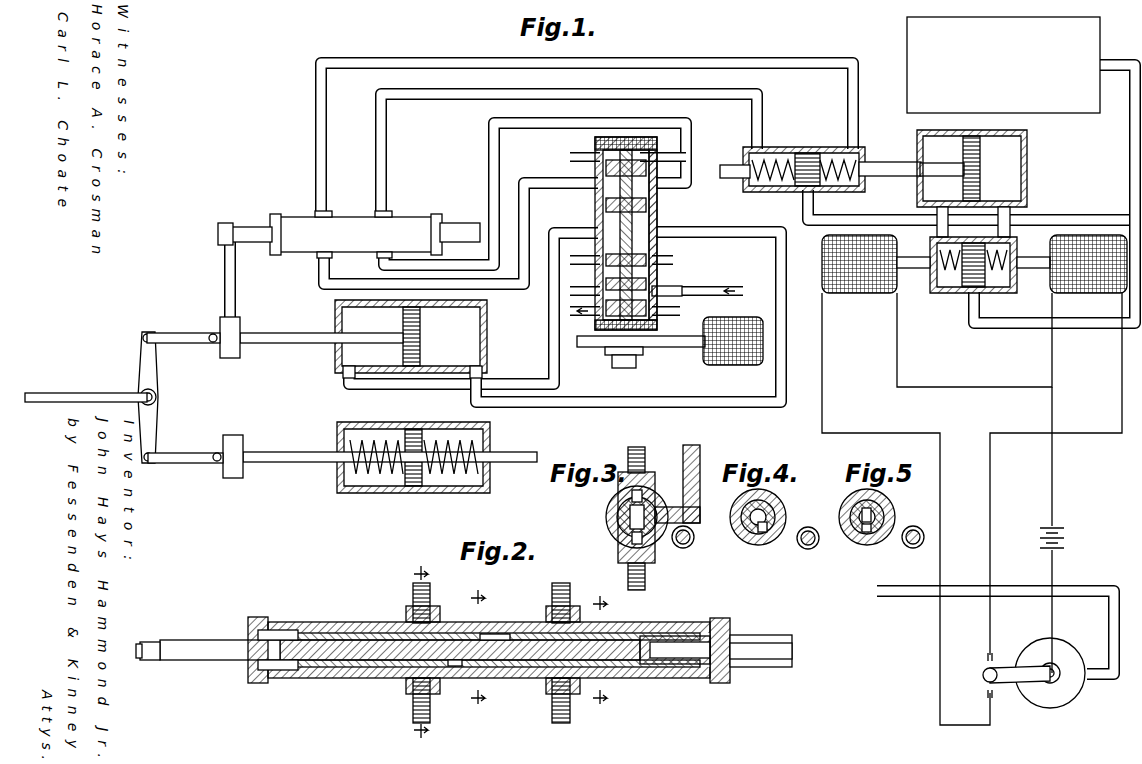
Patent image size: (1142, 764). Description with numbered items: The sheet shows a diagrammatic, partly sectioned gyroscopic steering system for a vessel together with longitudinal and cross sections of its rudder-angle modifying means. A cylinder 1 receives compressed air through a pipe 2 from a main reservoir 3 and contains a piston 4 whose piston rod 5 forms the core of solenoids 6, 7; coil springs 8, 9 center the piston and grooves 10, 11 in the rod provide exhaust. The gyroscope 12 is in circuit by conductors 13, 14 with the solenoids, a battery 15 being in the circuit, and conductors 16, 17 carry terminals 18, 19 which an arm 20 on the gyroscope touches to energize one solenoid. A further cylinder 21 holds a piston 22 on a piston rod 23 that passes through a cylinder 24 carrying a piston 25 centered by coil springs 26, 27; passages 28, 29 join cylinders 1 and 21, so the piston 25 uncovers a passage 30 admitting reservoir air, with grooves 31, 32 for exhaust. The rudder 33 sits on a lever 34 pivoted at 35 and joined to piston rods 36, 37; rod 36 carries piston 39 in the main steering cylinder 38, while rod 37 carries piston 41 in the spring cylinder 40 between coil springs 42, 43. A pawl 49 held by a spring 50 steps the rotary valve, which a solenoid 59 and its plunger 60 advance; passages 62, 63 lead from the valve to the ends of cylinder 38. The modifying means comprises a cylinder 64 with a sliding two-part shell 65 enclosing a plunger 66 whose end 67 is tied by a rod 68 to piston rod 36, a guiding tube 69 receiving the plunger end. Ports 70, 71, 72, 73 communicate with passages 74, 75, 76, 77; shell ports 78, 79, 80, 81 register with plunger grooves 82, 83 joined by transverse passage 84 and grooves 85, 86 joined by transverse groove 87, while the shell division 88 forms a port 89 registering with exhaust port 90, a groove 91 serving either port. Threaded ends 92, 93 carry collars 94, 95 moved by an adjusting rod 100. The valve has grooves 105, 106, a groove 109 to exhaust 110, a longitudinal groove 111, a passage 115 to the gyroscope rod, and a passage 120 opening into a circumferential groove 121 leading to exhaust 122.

In FIG. 1, the cylinder 1 is at (960, 298).
In FIG. 1, the pipe 2 is at (1130, 140).
In FIG. 1, the main reservoir 3 is at (918, 45).
In FIG. 2, the main reservoir 3 is at (421, 654).
In FIG. 1, the piston 4 is at (976, 287).
In FIG. 2, the piston 4 is at (478, 648).
In FIG. 1, the piston rod 5 is at (1030, 270).
In FIG. 2, the piston rod 5 is at (600, 651).
In FIG. 1, the solenoid 6 is at (862, 293).
In FIG. 1, the solenoid 7 is at (1090, 293).
In FIG. 1, the coil spring 8 is at (945, 287).
In FIG. 1, the coil spring 9 is at (1026, 262).
In FIG. 1, the groove 10 is at (918, 260).
In FIG. 1, the groove 11 is at (630, 248).
In FIG. 1, the gyroscope 12 is at (1078, 712).
In FIG. 1, the conductor 13 is at (1066, 562).
In FIG. 1, the conductor 14 is at (968, 387).
In FIG. 1, the battery 15 is at (1056, 530).
In FIG. 1, the conductor 16 is at (822, 394).
In FIG. 1, the conductor 17 is at (1122, 394).
In FIG. 1, the terminal 18 is at (986, 696).
In FIG. 1, the terminal 19 is at (992, 654).
In FIG. 1, the arm 20 is at (1010, 690).
In FIG. 1, the cylinder 21 is at (1027, 176).
In FIG. 1, the piston 22 is at (980, 172).
In FIG. 1, the piston rod 23 is at (900, 177).
In FIG. 1, the cylinder 24 is at (765, 188).
In FIG. 1, the piston 25 is at (806, 148).
In FIG. 1, the coil spring 26 is at (748, 190).
In FIG. 1, the coil spring 27 is at (836, 190).
In FIG. 1, the passage 28 is at (937, 238).
In FIG. 1, the passage 29 is at (1010, 238).
In FIG. 1, the passage 30 is at (803, 218).
In FIG. 1, the groove 31 is at (728, 164).
In FIG. 1, the groove 32 is at (878, 166).
In FIG. 1, the rudder 33 is at (88, 393).
In FIG. 1, the lever 34 is at (156, 374).
In FIG. 1, the pivot 35 is at (157, 400).
In FIG. 1, the piston rod 36 is at (265, 332).
In FIG. 1, the piston rod 37 is at (272, 450).
In FIG. 1, the main steering cylinder 38 is at (335, 316).
In FIG. 1, the piston 39 is at (421, 334).
In FIG. 1, the spring cylinder 40 is at (368, 493).
In FIG. 1, the piston 41 is at (413, 493).
In FIG. 1, the coil spring 42 is at (380, 438).
In FIG. 1, the coil spring 43 is at (444, 438).
In FIG. 1, the pawl 49 is at (608, 356).
In FIG. 1, the spring 50 is at (640, 362).
In FIG. 1, the solenoid 59 is at (733, 365).
In FIG. 1, the core or plunger 60 is at (678, 347).
In FIG. 1, the passage 62 is at (549, 298).
In FIG. 1, the passage 63 is at (738, 238).
In FIG. 1, the cylinder 64 is at (350, 222).
In FIG. 2, the cylinder 64 is at (487, 638).
In FIG. 3, the cylinder 64 is at (618, 522).
In FIG. 4, the cylinder 64 is at (742, 530).
In FIG. 5, the cylinder 64 is at (848, 526).
In FIG. 2, the two-part shell or inner cylinder 65 is at (362, 680).
In FIG. 4, the two-part shell or inner cylinder 65 is at (746, 514).
In FIG. 5, the two-part shell or inner cylinder 65 is at (852, 516).
In FIG. 1, the plunger 66 is at (255, 226).
In FIG. 2, the plunger 66 is at (200, 645).
In FIG. 3, the plunger 66 is at (660, 542).
In FIG. 4, the plunger 66 is at (745, 503).
In FIG. 5, the plunger 66 is at (886, 506).
In FIG. 2, the end of plunger 67 is at (152, 641).
In FIG. 1, the rod 68 is at (223, 268).
In FIG. 1, the guard or guiding tube 69 is at (458, 224).
In FIG. 2, the guard or guiding tube 69 is at (766, 642).
In FIG. 2, the port 70 is at (440, 618).
In FIG. 3, the port 70 is at (630, 494).
In FIG. 2, the port 71 is at (412, 692).
In FIG. 3, the port 71 is at (630, 546).
In FIG. 2, the port 72 is at (556, 620).
In FIG. 2, the port 73 is at (556, 708).
In FIG. 1, the passage 74 is at (327, 104).
In FIG. 2, the passage 74 is at (415, 588).
In FIG. 3, the passage 74 is at (628, 457).
In FIG. 1, the passage 75 is at (542, 180).
In FIG. 2, the passage 75 is at (418, 716).
In FIG. 3, the passage 75 is at (646, 578).
In FIG. 1, the passage 76 is at (447, 96).
In FIG. 2, the passage 76 is at (564, 586).
In FIG. 1, the passage 77 is at (489, 158).
In FIG. 2, the elongated port 78 is at (468, 626).
In FIG. 3, the elongated port 78 is at (683, 495).
In FIG. 2, the port 79 is at (408, 676).
In FIG. 2, the elongated port 80 is at (545, 628).
In FIG. 2, the port 81 is at (552, 690).
In FIG. 2, the groove 82 is at (408, 618).
In FIG. 3, the groove 82 is at (615, 511).
In FIG. 2, the groove 83 is at (330, 626).
In FIG. 3, the groove 83 is at (618, 535).
In FIG. 2, the transverse passage 84 is at (382, 628).
In FIG. 2, the longitudinal groove 85 is at (588, 626).
In FIG. 2, the groove 86 is at (576, 712).
In FIG. 5, the groove 86 is at (862, 536).
In FIG. 2, the transverse groove 87 is at (628, 634).
In FIG. 5, the transverse groove 87 is at (862, 510).
In FIG. 2, the circumferential division 88 is at (496, 632).
In FIG. 2, the port 89 is at (532, 668).
In FIG. 2, the exhaust port 90 is at (490, 668).
In FIG. 2, the groove 91 is at (454, 668).
In FIG. 4, the groove 91 is at (767, 534).
In FIG. 2, the threaded end 92 is at (300, 628).
In FIG. 2, the threaded end 93 is at (692, 634).
In FIG. 2, the collar 94 is at (306, 680).
In FIG. 2, the collar 95 is at (694, 682).
In FIG. 3, the threaded adjusting rod 100 is at (688, 548).
In FIG. 4, the threaded adjusting rod 100 is at (809, 549).
In FIG. 5, the threaded adjusting rod 100 is at (913, 548).
In FIG. 1, the groove 105 is at (595, 204).
In FIG. 1, the groove 106 is at (657, 204).
In FIG. 1, the groove 109 is at (595, 145).
In FIG. 1, the exhaust 110 is at (680, 155).
In FIG. 1, the longitudinal groove 111 is at (640, 258).
In FIG. 1, the passage 115 is at (893, 596).
In FIG. 1, the longitudinal passage 120 is at (684, 282).
In FIG. 1, the circumferential groove 121 is at (657, 322).
In FIG. 1, the exhaust 122 is at (575, 316).